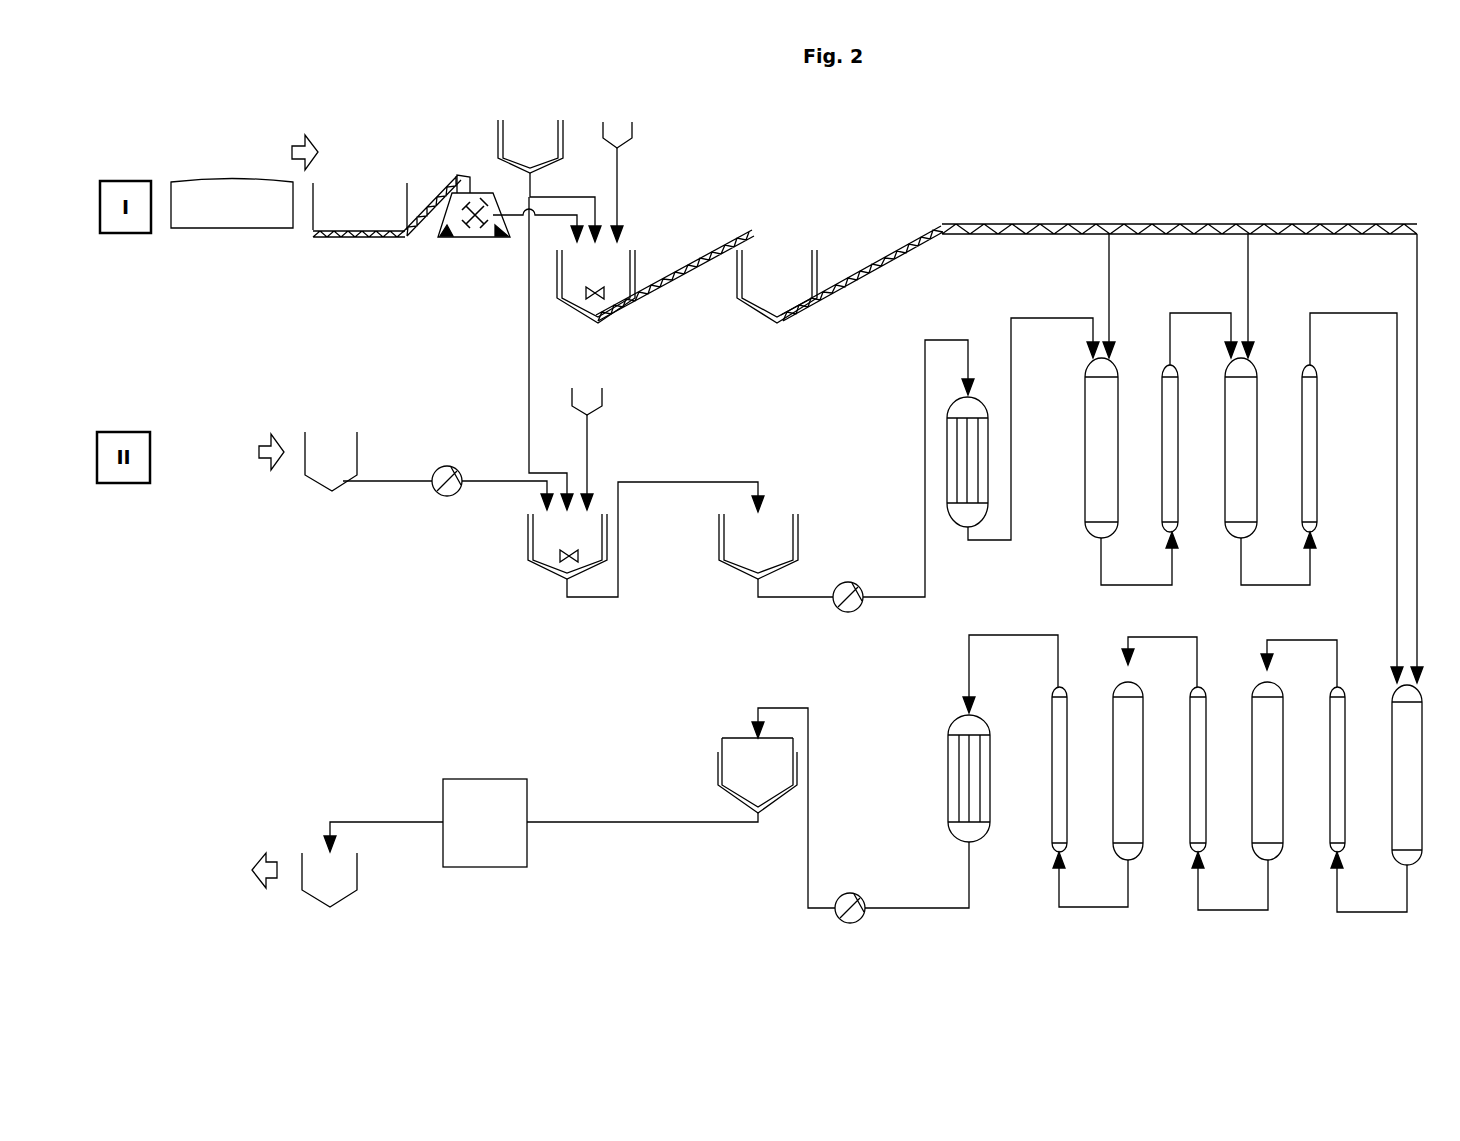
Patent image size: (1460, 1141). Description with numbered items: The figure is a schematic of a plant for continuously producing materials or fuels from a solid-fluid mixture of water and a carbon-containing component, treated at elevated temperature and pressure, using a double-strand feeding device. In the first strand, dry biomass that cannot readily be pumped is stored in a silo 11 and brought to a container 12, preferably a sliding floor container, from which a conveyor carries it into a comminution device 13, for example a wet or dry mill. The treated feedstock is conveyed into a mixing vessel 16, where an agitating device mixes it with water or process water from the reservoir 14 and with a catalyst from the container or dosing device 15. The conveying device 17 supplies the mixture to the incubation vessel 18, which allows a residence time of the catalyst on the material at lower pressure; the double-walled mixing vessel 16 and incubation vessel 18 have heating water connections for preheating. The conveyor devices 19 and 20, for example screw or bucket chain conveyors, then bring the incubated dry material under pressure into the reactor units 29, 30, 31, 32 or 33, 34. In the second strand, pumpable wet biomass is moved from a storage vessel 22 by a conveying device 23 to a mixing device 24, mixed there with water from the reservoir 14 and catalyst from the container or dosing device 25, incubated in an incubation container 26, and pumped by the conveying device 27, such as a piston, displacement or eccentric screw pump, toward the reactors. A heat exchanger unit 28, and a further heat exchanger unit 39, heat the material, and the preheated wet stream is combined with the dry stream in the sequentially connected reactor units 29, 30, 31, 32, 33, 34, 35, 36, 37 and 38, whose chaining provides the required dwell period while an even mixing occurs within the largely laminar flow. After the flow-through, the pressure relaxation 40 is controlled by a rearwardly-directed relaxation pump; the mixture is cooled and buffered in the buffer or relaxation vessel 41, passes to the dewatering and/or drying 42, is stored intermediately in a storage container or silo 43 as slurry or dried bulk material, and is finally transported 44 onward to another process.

The silo 11 is at (245, 200).
The container 12 is at (383, 190).
The comminution device 13 is at (470, 228).
The reservoir 14 is at (530, 115).
The container or dosing device 15 is at (616, 121).
The mixing vessel 16 is at (600, 268).
The conveying device 17 is at (727, 244).
The incubation vessel 18 is at (780, 268).
The conveyor device 19 is at (897, 246).
The conveyor device 20 is at (1173, 225).
The storage vessel 22 is at (332, 448).
The conveying device 23 is at (441, 498).
The mixing device 24 is at (551, 535).
The container or dosing device 25 is at (588, 395).
The incubation container 26 is at (752, 537).
The conveying device 27 is at (837, 606).
The heat exchanger unit 28 is at (955, 505).
The reactor unit 29 is at (1095, 483).
The reactor unit 30 is at (1168, 490).
The reactor unit 31 is at (1238, 485).
The reactor unit 32 is at (1312, 490).
The reactor unit 33 is at (1408, 805).
The reactor unit 34 is at (1335, 810).
The reactor unit 35 is at (1265, 805).
The reactor unit 36 is at (1198, 820).
The reactor unit 37 is at (1128, 805).
The reactor unit 38 is at (1058, 818).
The heat exchanger unit 39 is at (968, 831).
The pressure relaxation 40 is at (850, 910).
The buffer or relaxation vessel 41 is at (757, 772).
The dewatering and/or drying 42 is at (478, 810).
The storage container or silo 43 is at (328, 882).
The transport 44 is at (263, 873).